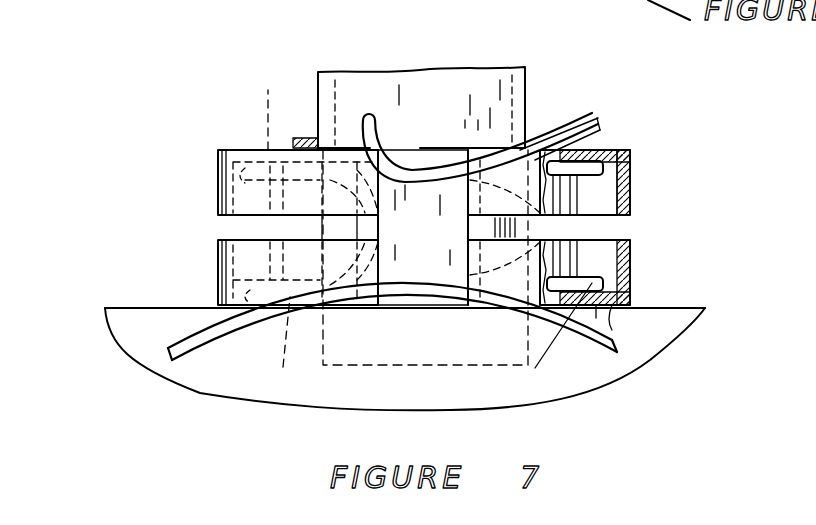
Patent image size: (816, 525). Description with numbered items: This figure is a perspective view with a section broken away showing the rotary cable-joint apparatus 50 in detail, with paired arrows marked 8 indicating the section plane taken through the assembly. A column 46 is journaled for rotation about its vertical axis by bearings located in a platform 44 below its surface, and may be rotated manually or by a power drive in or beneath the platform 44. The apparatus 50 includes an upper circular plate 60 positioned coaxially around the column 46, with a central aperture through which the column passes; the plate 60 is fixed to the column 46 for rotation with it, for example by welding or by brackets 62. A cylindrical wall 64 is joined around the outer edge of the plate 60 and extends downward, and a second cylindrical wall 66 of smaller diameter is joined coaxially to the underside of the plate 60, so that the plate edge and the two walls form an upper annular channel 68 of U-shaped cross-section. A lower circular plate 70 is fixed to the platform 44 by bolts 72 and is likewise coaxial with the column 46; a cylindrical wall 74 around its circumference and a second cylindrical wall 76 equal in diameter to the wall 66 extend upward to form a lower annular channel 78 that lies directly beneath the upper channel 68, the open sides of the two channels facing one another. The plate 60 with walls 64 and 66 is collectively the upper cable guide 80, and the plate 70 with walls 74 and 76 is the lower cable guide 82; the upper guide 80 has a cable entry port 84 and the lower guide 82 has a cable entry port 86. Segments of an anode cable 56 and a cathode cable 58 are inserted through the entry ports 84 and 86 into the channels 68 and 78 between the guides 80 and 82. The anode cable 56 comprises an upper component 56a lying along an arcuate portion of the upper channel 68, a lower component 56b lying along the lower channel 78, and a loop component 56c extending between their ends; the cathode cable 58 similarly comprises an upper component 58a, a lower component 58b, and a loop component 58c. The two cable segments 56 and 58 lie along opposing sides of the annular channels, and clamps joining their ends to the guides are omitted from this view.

The section line 8- 8 is at (96, 86).
The platform 44 is at (688, 318).
The column 46 is at (520, 68).
The apparatus 50 is at (198, 197).
The anode cable 56 is at (580, 123).
The upper component 56a is at (242, 105).
The lower component 56b is at (282, 346).
The loop component 56c is at (431, 227).
The cathode cable 58 is at (372, 112).
The upper component 58a is at (601, 126).
The lower component 58b is at (545, 339).
The loop component 58c is at (467, 295).
The upper circular plate 60 is at (626, 150).
The brackets 62 is at (318, 128).
The cylindrical wall 64 is at (620, 168).
The second cylindrical wall 66 is at (582, 193).
The upper annular channel 68 is at (604, 205).
The lower circular plate 70 is at (622, 305).
The bolts 72 is at (598, 306).
The cylindrical wall 74 is at (622, 265).
The second cylindrical wall 76 is at (606, 289).
The lower annular channel 78 is at (600, 248).
The upper cable guide 80 is at (240, 150).
The lower cable guide 82 is at (218, 267).
The cable entry port 84 is at (428, 200).
The cable entry port 86 is at (398, 283).